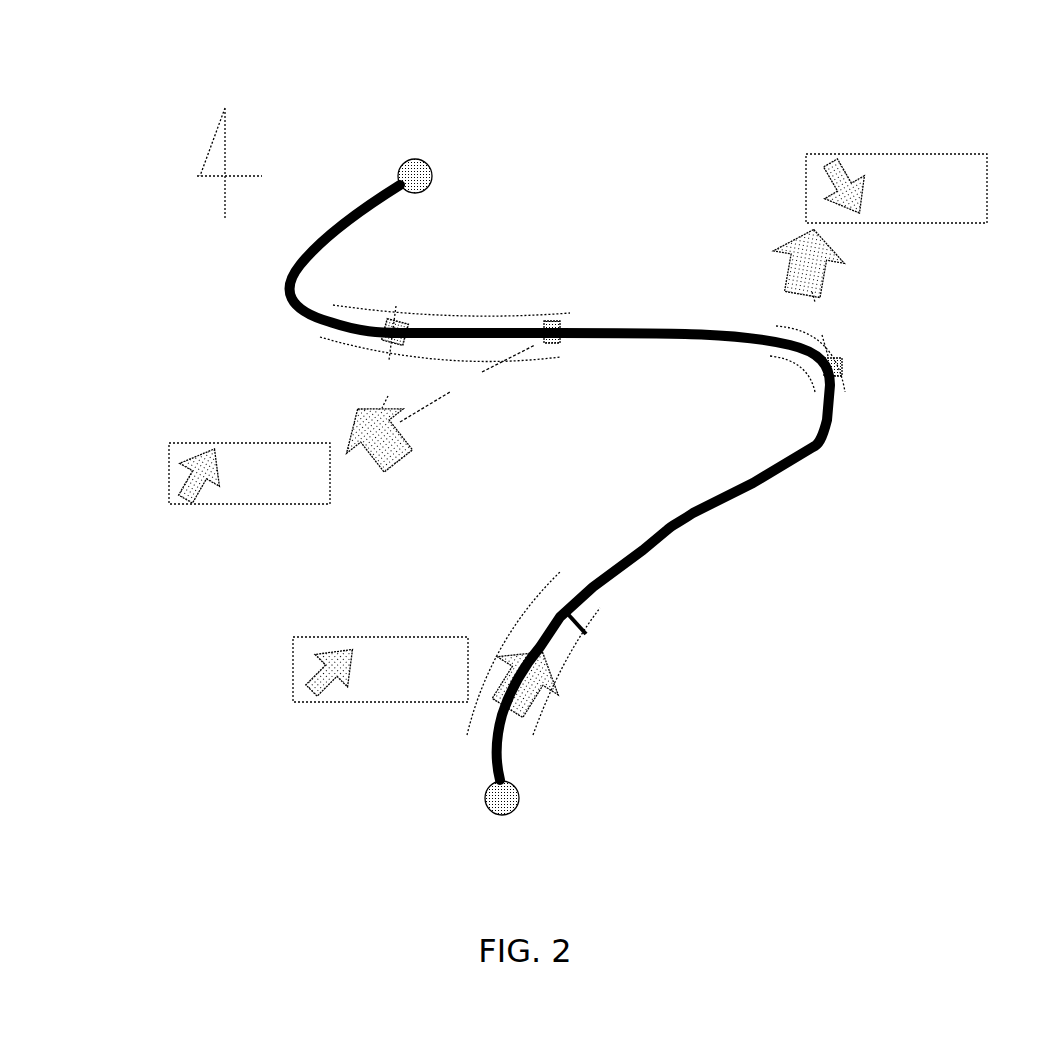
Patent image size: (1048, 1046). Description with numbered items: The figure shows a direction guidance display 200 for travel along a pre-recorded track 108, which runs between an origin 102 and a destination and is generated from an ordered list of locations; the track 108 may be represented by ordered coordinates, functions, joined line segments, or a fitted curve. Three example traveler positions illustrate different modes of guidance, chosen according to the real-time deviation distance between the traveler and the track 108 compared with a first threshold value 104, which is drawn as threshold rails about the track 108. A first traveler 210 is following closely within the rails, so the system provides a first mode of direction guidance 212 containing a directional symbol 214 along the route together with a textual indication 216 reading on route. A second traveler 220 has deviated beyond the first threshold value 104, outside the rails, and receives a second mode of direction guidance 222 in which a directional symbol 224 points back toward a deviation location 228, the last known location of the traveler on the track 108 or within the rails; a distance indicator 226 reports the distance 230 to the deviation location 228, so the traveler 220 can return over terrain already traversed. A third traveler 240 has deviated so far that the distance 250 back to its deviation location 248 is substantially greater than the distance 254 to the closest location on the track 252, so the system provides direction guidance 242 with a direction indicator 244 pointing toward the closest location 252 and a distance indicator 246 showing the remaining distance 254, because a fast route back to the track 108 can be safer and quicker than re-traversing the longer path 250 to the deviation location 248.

The navigation display 200 is at (76, 70).
The origin location 102 is at (506, 790).
The first threshold value 104 is at (418, 175).
The pre-recorded track 108 is at (700, 506).
The first traveler 210 is at (533, 653).
The first mode of direction guidance 212 is at (312, 637).
The directional symbol 214 is at (320, 685).
The textual indication 216 is at (406, 684).
The second traveler 220 is at (808, 261).
The second mode of direction guidance 222 is at (900, 153).
The directional symbol 224 is at (860, 208).
The distance indicator 226 is at (955, 200).
The deviation location 228 is at (842, 362).
The distance 230 is at (807, 342).
The traveler 240 is at (377, 435).
The direction guidance 242 is at (178, 442).
The direction indicator 244 is at (188, 503).
The distance indicator 246 is at (278, 486).
The deviation location 248 is at (556, 320).
The distance 250 is at (467, 383).
The closest location on the track 252 is at (400, 318).
The distance 254 is at (383, 357).